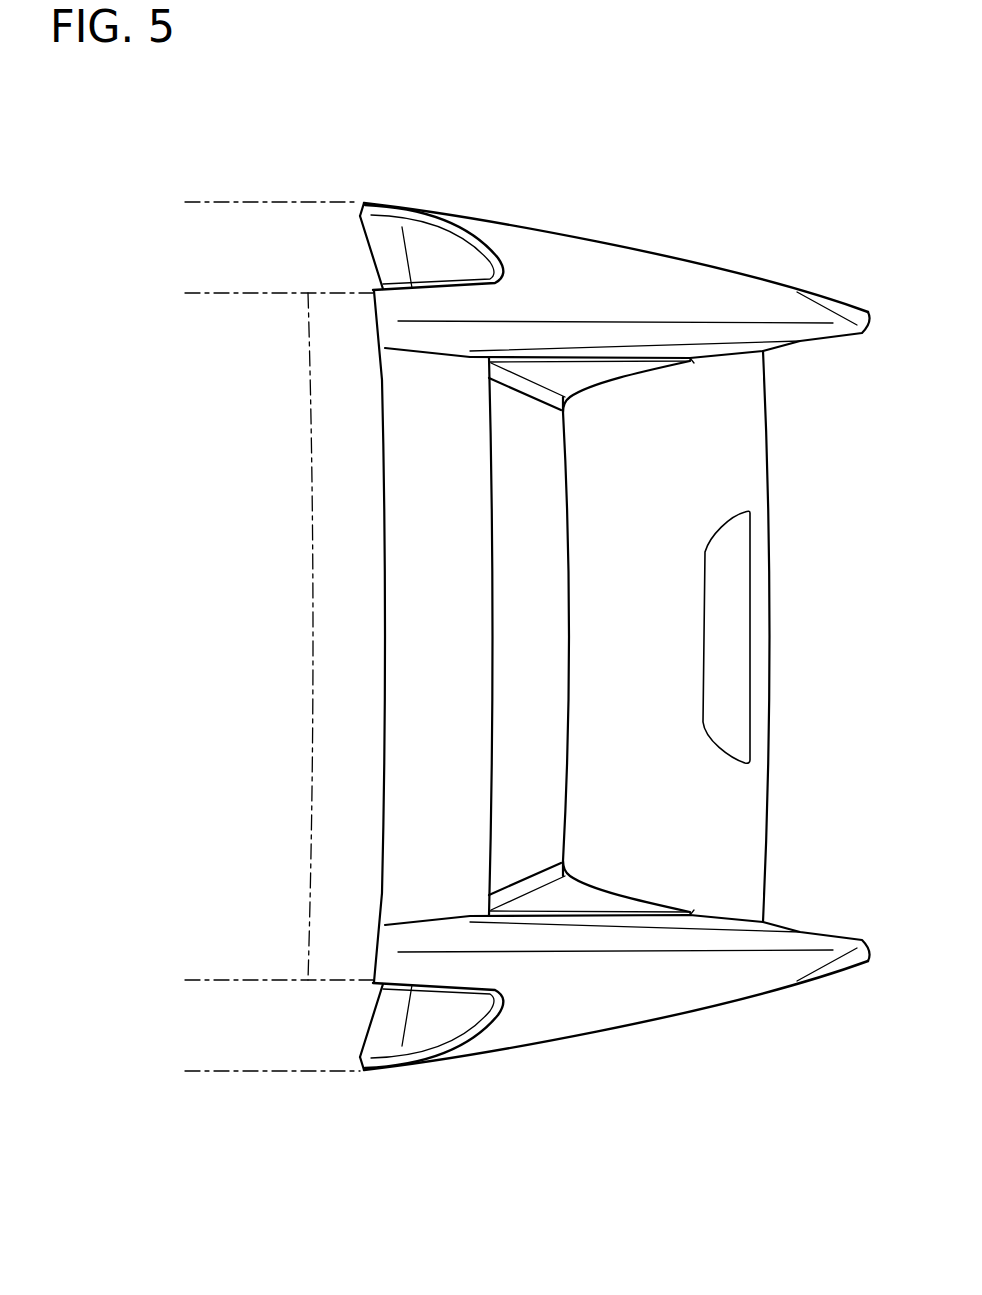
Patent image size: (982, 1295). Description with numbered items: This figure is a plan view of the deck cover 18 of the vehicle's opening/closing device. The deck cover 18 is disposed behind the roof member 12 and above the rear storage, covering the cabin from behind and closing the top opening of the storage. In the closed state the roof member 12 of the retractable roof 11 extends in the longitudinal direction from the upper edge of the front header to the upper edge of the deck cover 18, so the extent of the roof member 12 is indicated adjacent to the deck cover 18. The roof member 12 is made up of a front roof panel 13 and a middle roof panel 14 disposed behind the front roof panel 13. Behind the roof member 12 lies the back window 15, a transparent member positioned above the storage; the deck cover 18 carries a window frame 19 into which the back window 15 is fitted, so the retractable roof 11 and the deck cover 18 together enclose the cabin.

The retractable roof 11 is at (298, 258).
The roof member 12 is at (270, 986).
The front roof panel 13 is at (233, 947).
The middle roof panel 14 is at (345, 947).
The back window 15 is at (538, 490).
The deck cover 18 is at (567, 236).
The window frame 19 is at (572, 703).